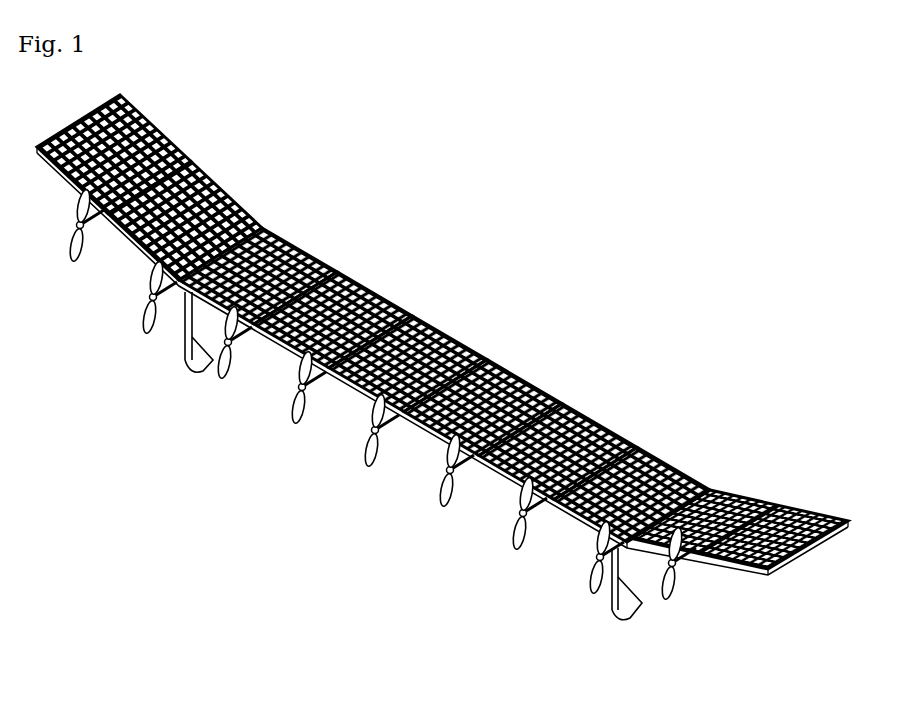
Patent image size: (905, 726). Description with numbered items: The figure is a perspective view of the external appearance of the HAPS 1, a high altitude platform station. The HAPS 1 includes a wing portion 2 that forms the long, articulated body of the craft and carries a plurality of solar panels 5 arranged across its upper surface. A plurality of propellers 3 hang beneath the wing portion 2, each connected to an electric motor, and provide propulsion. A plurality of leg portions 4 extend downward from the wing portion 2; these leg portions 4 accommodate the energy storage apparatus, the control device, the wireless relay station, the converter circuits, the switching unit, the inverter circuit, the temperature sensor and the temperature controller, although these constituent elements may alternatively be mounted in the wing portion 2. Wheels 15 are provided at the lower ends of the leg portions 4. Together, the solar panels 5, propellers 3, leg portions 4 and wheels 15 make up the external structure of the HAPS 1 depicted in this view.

The HAPS 1 is at (173, 562).
The wing portion 2 is at (783, 563).
The propellers 3 is at (298, 400).
The leg portions 4 is at (197, 335).
The solar panels 5 is at (383, 303).
The wheels 15 is at (200, 367).